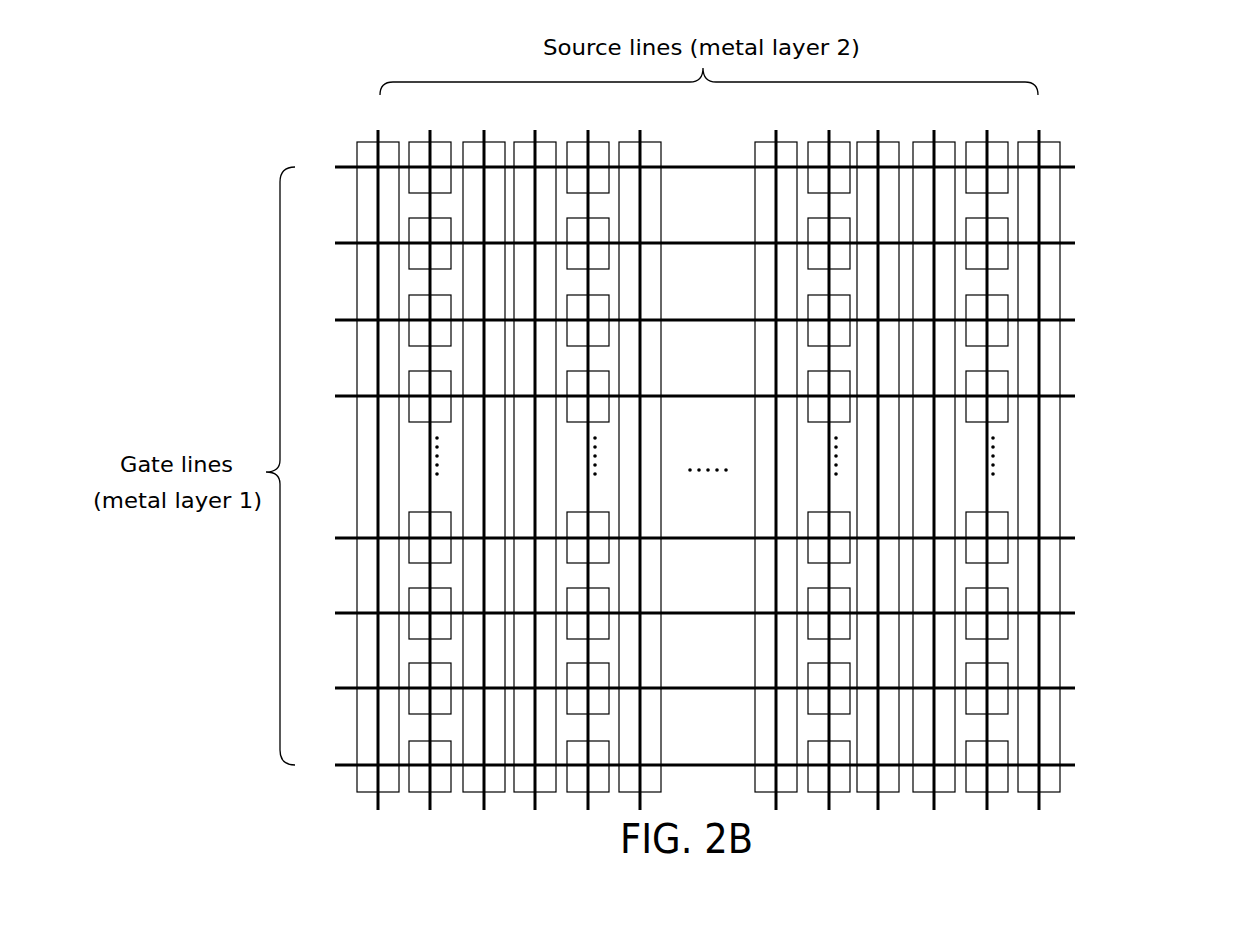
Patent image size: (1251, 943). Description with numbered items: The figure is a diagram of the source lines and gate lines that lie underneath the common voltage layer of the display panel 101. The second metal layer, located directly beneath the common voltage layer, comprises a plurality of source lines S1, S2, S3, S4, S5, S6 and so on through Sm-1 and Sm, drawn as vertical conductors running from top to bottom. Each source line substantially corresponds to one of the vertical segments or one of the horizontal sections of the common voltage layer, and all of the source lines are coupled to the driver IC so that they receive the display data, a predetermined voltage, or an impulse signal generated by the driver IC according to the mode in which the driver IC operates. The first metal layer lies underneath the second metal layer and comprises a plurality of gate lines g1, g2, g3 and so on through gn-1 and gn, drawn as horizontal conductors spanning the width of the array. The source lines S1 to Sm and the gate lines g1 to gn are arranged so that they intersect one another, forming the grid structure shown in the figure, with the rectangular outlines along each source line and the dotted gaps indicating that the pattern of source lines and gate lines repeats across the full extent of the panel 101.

The pixel array (display panel with gate lines and source lines) 101 is at (766, 421).
The source line S1 is at (380, 457).
The source line S2 is at (432, 457).
The source line S3 is at (486, 457).
The source line S4 is at (537, 457).
The source line S5 is at (590, 457).
The source line S6 is at (642, 457).
The source line Sm-1 is at (987, 457).
The source line Sm is at (1039, 457).
The gate line g1 is at (691, 164).
The gate line g2 is at (691, 240).
The gate line g3 is at (691, 317).
The gate line gn-1 is at (685, 685).
The gate line gn is at (691, 762).